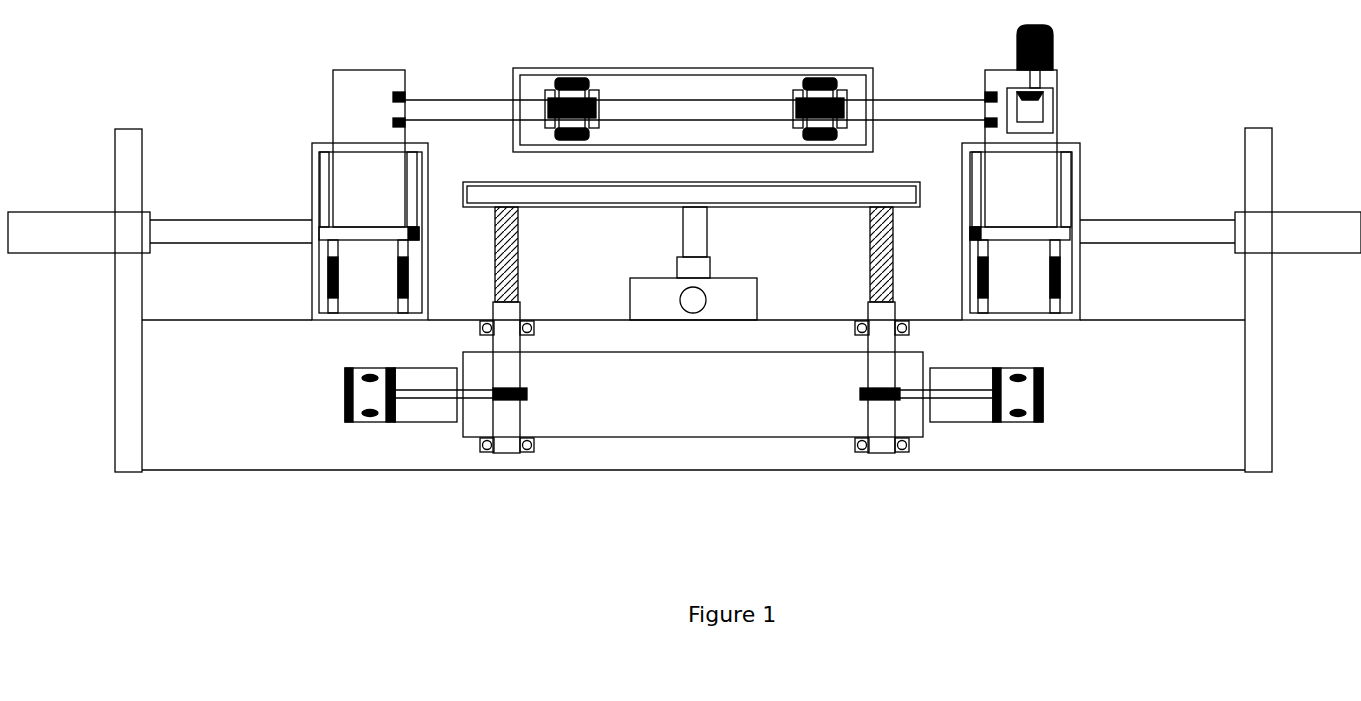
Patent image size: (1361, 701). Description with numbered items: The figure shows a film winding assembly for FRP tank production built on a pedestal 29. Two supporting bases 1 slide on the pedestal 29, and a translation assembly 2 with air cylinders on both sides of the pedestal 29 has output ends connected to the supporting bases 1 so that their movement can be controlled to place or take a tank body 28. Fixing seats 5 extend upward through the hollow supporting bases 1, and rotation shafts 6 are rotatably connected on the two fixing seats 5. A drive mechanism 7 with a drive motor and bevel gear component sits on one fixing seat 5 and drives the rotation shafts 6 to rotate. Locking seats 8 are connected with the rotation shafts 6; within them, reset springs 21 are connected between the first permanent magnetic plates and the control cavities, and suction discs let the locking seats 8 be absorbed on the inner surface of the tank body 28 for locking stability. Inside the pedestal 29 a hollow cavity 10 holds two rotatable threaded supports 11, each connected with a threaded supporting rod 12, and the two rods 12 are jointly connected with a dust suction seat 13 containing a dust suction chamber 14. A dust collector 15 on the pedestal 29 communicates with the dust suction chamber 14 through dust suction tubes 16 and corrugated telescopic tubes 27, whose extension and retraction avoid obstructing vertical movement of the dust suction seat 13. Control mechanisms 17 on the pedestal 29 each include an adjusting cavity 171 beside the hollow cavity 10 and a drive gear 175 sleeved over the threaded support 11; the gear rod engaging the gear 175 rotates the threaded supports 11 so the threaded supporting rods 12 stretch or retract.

The supporting base 1 is at (311, 180).
The translation assembly 2 is at (58, 212).
The reset spring 21 is at (1305, 212).
The fixing seat 5 is at (333, 96).
The rotation shaft 6 is at (448, 100).
The drive mechanism 7 is at (1055, 48).
The locking seat 8 is at (600, 110).
The tank body 28 is at (696, 70).
The dust suction chamber 14 is at (622, 197).
The dust suction seat 13 is at (806, 208).
The threaded supporting rod 12 is at (520, 258).
The corrugated telescopic tube 27 is at (710, 228).
The dust suction tube 16 is at (713, 268).
The dust collector 15 is at (760, 300).
The threaded support 11 is at (527, 372).
The hollow cavity 10 is at (578, 437).
The control mechanism 17 is at (413, 425).
The adjusting cavity 171 is at (962, 412).
The drive gear 175 is at (860, 395).
The pedestal 29 is at (695, 471).